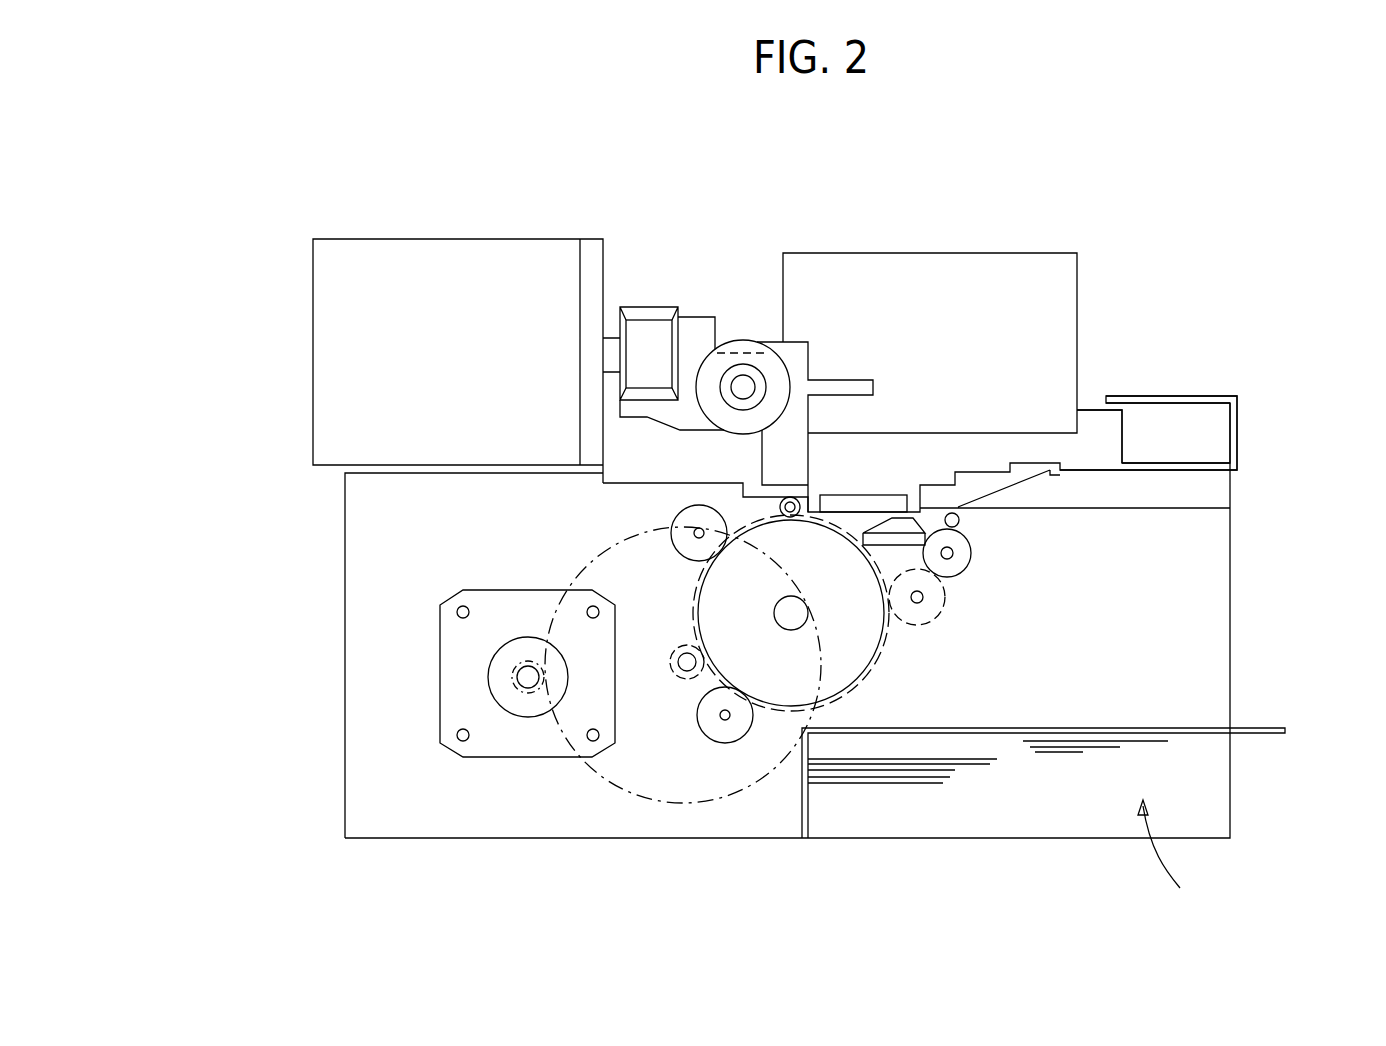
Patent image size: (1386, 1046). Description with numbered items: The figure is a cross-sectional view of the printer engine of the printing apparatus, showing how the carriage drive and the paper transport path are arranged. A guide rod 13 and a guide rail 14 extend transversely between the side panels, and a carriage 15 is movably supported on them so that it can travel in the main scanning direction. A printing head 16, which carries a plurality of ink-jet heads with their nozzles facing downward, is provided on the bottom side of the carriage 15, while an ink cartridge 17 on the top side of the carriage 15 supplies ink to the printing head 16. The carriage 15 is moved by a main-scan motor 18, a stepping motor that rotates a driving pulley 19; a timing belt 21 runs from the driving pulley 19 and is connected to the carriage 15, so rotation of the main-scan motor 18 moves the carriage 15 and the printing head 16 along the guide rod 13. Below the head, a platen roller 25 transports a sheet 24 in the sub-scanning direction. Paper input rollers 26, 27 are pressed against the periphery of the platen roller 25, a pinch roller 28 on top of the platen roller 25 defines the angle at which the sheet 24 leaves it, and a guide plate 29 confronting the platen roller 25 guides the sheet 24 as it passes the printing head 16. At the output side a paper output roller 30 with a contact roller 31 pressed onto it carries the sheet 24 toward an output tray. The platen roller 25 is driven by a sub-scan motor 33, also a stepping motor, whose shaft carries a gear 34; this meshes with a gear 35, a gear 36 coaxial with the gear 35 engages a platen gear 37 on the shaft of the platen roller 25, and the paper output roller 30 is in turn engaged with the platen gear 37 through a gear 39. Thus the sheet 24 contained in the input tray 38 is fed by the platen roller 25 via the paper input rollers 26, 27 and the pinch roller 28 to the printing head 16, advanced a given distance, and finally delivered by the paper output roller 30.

The guide rod 13 is at (743, 385).
The guide rail 14 is at (1240, 438).
The carriage 15 is at (1093, 435).
The printing head 16 is at (855, 503).
The ink cartridge 17 is at (1002, 285).
The main-scan motor 18 is at (365, 350).
The driving pulley 19 is at (655, 357).
The timing belt 21 is at (633, 313).
The sheet 24 is at (975, 760).
The platen roller 25 is at (838, 660).
The paper input roller 26 is at (723, 733).
The paper input roller 27 is at (728, 535).
The pinch roller 28 is at (790, 497).
The guide plate 29 is at (900, 537).
The paper output roller 30 is at (972, 554).
The contact roller 31 is at (960, 506).
The sub-scan motor 33 is at (460, 677).
The gear 34 is at (528, 677).
The gear 35 is at (637, 760).
The gear 36 is at (679, 675).
The platen gear 37 is at (862, 655).
The input tray 38 is at (1165, 862).
The gear 39 is at (925, 597).